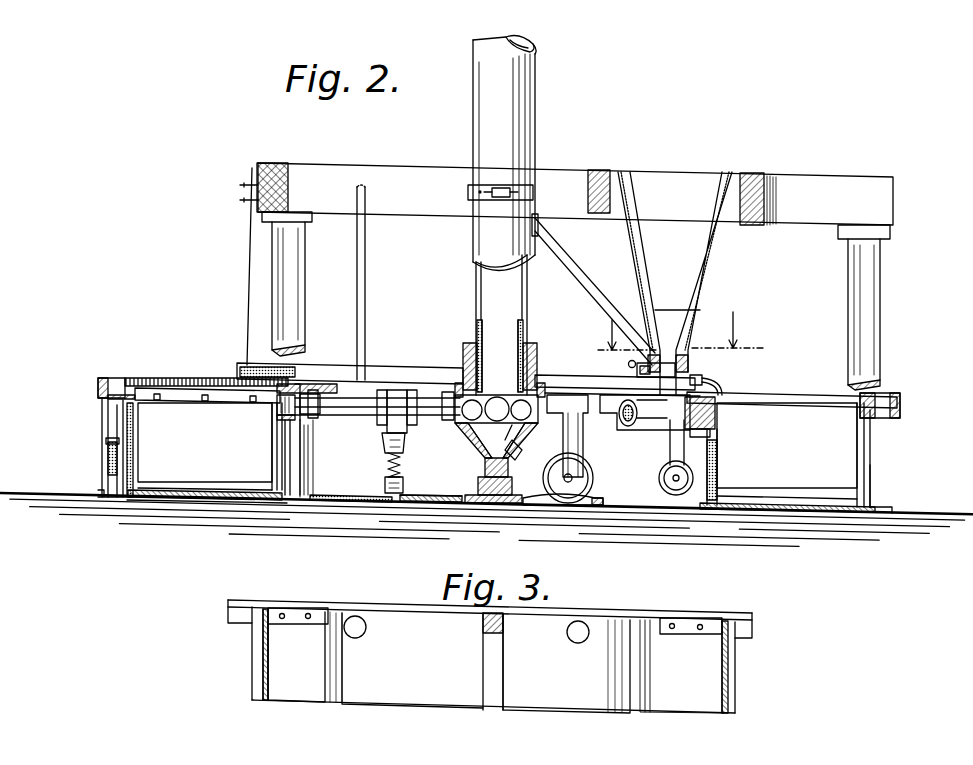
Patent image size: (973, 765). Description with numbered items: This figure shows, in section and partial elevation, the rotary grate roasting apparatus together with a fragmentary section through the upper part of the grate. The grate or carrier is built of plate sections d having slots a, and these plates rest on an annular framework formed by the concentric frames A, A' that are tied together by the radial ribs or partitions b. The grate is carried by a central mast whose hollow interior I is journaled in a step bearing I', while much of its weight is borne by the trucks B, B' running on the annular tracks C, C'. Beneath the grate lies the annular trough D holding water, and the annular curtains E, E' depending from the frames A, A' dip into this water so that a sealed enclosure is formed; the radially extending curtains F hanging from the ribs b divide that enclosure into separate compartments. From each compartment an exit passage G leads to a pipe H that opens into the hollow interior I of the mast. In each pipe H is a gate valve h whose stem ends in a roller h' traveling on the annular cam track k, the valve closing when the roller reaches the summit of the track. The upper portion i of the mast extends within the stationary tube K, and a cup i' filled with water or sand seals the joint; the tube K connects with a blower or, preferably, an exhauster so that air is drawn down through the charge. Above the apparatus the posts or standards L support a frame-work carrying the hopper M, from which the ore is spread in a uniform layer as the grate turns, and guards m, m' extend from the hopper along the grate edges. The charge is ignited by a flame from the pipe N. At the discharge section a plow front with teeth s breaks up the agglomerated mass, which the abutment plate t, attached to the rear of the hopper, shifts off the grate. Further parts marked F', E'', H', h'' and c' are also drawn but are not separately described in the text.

In FIG. 2, the stationary tube K is at (528, 163).
In FIG. 2, the hopper M is at (675, 283).
In FIG. 2, the posts or standards L is at (320, 292).
In FIG. 2, the concentric frame A is at (503, 401).
In FIG. 3, the concentric frame A is at (505, 650).
In FIG. 2, the concentric frame A' is at (513, 389).
In FIG. 2, the plate sections d is at (195, 378).
In FIG. 2, the radial ribs or partitions b is at (175, 402).
In FIG. 3, the radial ribs or partitions b is at (300, 608).
In FIG. 2, the radially extending curtains F is at (205, 444).
In FIG. 3, the box section F' is at (495, 662).
In FIG. 2, the annular curtain E is at (470, 455).
In FIG. 2, the annular curtain E' is at (731, 467).
In FIG. 2, the upright E'' is at (267, 445).
In FIG. 2, the truck B is at (344, 436).
In FIG. 2, the truck B' is at (328, 458).
In FIG. 2, the annular track C is at (489, 491).
In FIG. 2, the annular track C' is at (659, 461).
In FIG. 2, the annular trough D is at (175, 500).
In FIG. 2, the exit passage G is at (316, 394).
In FIG. 3, the exit passage G is at (357, 638).
In FIG. 2, the pipe H is at (377, 380).
In FIG. 2, the post H' is at (323, 417).
In FIG. 2, the gate valve h is at (403, 423).
In FIG. 2, the roller h' is at (405, 465).
In FIG. 2, the valve foot h'' is at (423, 488).
In FIG. 2, the upper portion of the mast i is at (511, 353).
In FIG. 2, the cup i' is at (505, 366).
In FIG. 2, the hollow interior of the central mast I is at (508, 421).
In FIG. 2, the step bearing I' is at (499, 484).
In FIG. 2, the annular cam track k is at (445, 501).
In FIG. 2, the guard m is at (615, 381).
In FIG. 2, the guard m' is at (350, 373).
In FIG. 2, the pipe N is at (638, 365).
In FIG. 2, the abutment plate t is at (703, 378).
In FIG. 2, the teeth s is at (722, 390).
In FIG. 2, the slots a is at (795, 394).
In FIG. 2, the foot c' is at (351, 486).